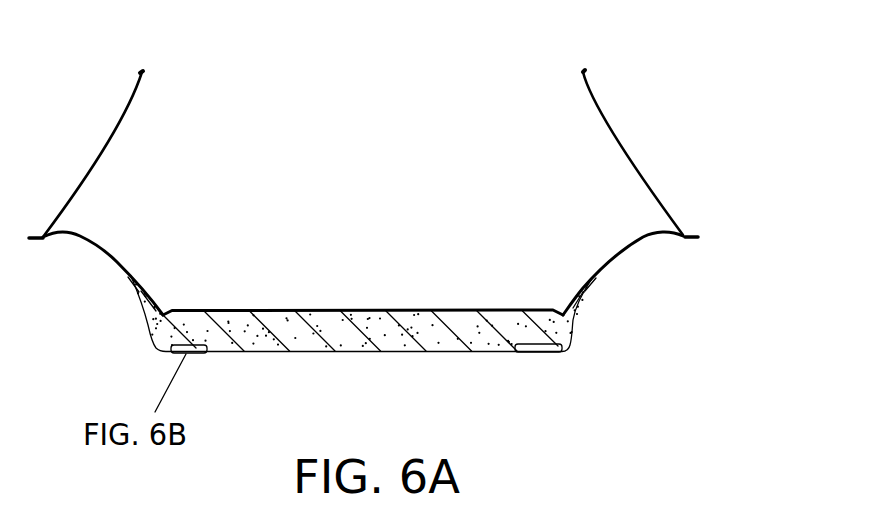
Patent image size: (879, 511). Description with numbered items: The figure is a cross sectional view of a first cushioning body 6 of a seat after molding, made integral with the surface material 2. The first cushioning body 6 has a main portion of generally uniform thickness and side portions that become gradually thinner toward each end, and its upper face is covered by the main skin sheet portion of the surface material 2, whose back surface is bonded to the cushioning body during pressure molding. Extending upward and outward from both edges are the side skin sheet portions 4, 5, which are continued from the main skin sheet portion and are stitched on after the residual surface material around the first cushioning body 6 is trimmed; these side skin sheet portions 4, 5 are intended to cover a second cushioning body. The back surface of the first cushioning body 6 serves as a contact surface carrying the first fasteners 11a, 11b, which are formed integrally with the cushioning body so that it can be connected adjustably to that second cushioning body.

The surface material 2 is at (303, 308).
The side skin sheet portion 4 is at (613, 133).
The side skin sheet portion 5 is at (108, 142).
The first cushioning body 6 is at (352, 341).
The first fastener 11a is at (571, 349).
The first fastener 11b is at (205, 354).